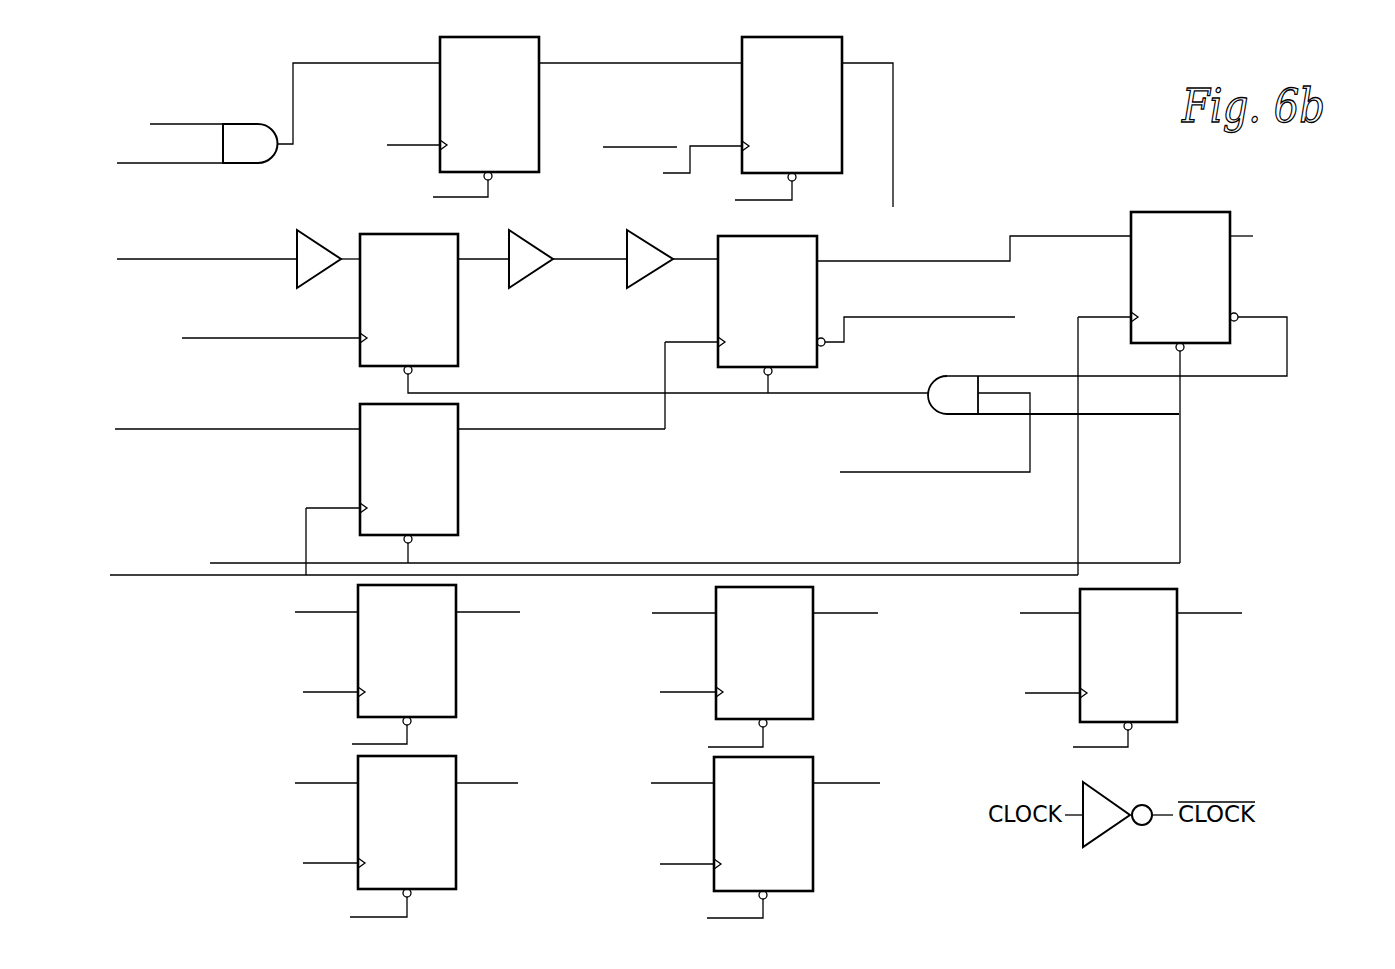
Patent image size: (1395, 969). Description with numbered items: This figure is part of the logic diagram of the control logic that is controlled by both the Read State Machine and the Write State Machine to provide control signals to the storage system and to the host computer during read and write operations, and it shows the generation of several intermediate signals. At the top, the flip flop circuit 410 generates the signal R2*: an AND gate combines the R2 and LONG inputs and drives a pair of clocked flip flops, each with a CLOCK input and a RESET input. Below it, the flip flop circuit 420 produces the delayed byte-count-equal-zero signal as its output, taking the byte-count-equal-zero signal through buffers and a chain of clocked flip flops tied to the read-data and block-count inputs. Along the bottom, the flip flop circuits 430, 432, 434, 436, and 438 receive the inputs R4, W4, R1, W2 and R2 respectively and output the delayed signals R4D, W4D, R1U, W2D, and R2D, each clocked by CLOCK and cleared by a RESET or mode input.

The flip flop circuit 410 is at (957, 118).
The flip flop circuit 420 is at (1272, 262).
The flip flop circuit 430 is at (456, 657).
The flip flop circuit 432 is at (813, 657).
The flip flop circuit 434 is at (1177, 658).
The flip flop circuit 436 is at (456, 823).
The flip flop circuit 438 is at (813, 828).